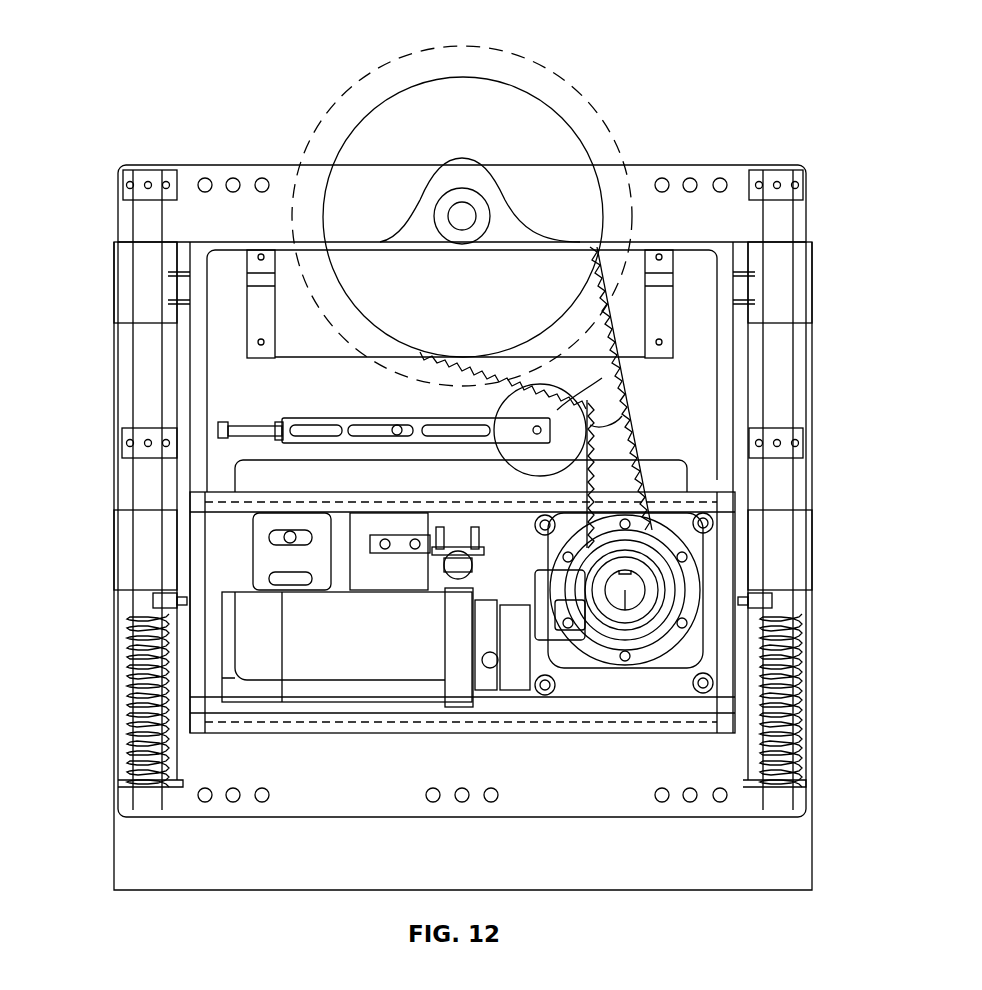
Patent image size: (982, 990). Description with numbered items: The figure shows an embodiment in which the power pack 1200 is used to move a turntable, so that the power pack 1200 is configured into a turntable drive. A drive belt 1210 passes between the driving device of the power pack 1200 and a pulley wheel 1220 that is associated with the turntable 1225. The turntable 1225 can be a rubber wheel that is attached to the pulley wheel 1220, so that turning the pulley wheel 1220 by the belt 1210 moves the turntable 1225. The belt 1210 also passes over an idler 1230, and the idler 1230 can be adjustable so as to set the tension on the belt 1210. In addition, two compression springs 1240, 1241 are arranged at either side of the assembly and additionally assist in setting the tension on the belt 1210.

The power pack 1200 is at (633, 493).
The drive belt 1210 is at (622, 416).
The pulley wheel 1220 is at (512, 112).
The turntable 1225 is at (318, 140).
The idler 1230 is at (612, 379).
The compression spring 1240 is at (805, 690).
The compression spring 1241 is at (130, 701).